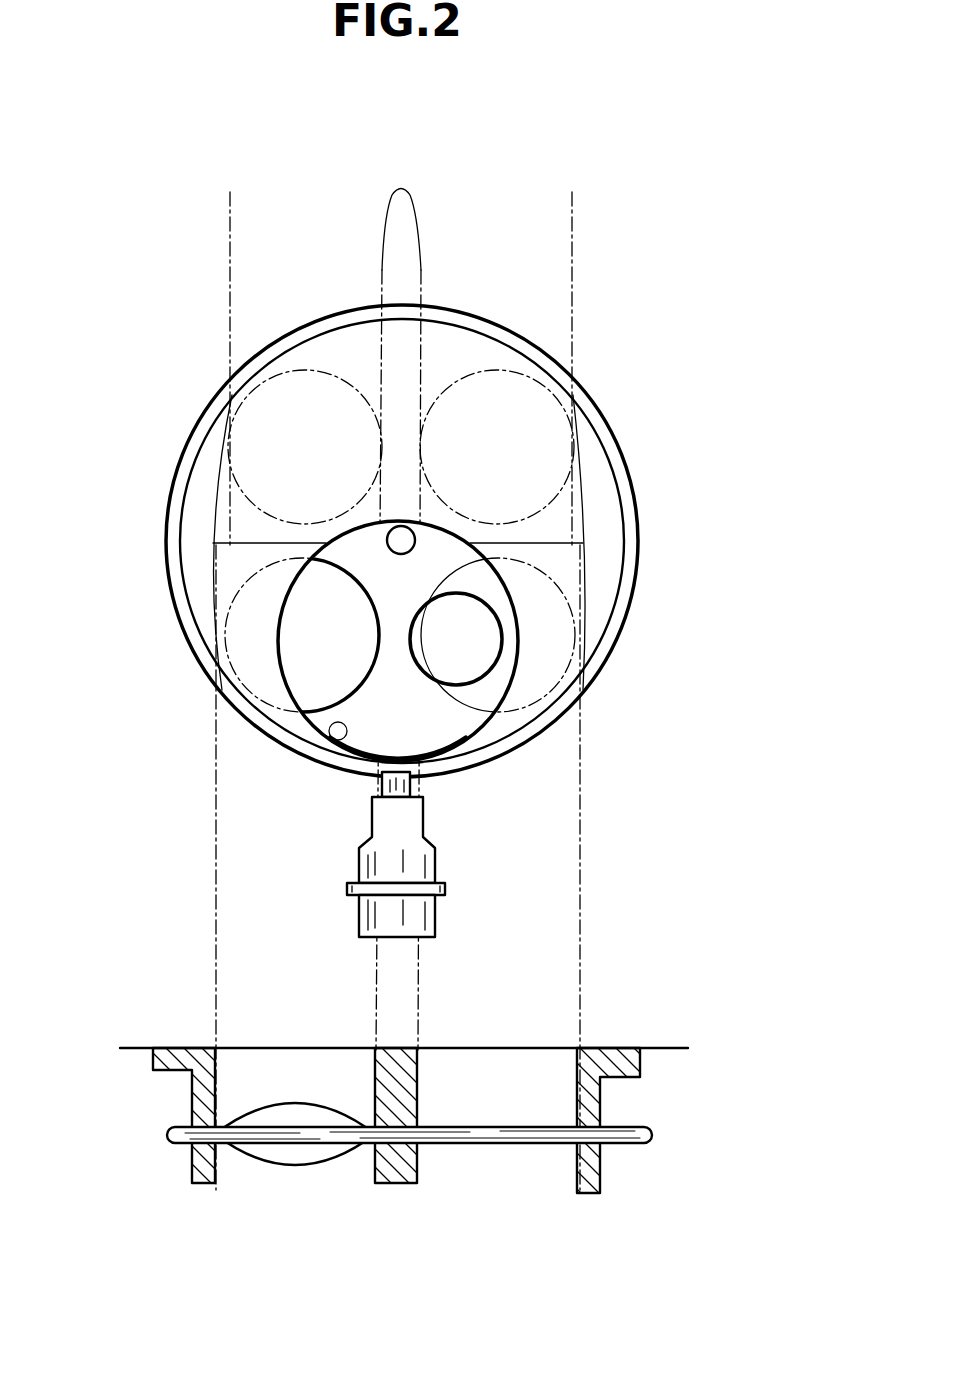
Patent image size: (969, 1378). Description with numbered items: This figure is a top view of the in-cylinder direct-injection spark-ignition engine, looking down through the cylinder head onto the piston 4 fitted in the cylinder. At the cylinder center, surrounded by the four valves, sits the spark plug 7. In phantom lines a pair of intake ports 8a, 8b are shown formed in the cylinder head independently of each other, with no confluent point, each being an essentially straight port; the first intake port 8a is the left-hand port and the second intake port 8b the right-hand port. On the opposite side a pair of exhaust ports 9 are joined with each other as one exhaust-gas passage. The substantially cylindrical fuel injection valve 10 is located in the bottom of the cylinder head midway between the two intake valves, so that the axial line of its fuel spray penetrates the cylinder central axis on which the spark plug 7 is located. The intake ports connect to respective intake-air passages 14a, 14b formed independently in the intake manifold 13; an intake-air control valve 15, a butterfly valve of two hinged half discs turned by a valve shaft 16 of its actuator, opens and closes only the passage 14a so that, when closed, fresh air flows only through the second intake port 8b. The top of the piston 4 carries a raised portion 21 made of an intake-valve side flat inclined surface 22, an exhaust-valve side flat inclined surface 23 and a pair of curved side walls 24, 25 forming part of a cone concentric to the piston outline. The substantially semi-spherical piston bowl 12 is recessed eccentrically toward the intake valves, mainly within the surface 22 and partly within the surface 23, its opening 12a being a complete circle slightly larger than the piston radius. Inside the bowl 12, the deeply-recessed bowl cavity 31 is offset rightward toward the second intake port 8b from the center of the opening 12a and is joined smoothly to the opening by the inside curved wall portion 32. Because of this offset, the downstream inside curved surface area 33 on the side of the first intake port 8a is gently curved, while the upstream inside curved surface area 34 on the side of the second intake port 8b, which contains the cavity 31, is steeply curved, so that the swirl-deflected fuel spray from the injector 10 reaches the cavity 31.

The piston 4 is at (650, 524).
The spark plug 7 is at (405, 527).
The first intake port 8a is at (237, 916).
The second intake port 8b is at (548, 915).
The exhaust port 9 is at (255, 232).
The fuel injection valve 10 is at (432, 852).
The piston bowl 12 is at (310, 672).
The opening of the piston bowl 12a is at (340, 753).
The intake manifold 13 is at (603, 1095).
The intake-air passage 14a is at (213, 1160).
The intake-air passage 14b is at (572, 1165).
The intake-air control valve 15 is at (297, 1158).
The valve shaft 16 is at (493, 1138).
The raised portion 21 is at (172, 545).
The intake-valve side flat inclined surface 22 is at (573, 577).
The exhaust-valve side flat inclined surface 23 is at (578, 475).
The curved side wall 24 is at (605, 500).
The curved side wall 25 is at (197, 497).
The deeply-recessed bowl cavity 31 is at (475, 662).
The inside curved wall portion 32 is at (440, 732).
The downstream inside curved surface area 33 is at (302, 603).
The upstream inside curved surface area 34 is at (510, 638).